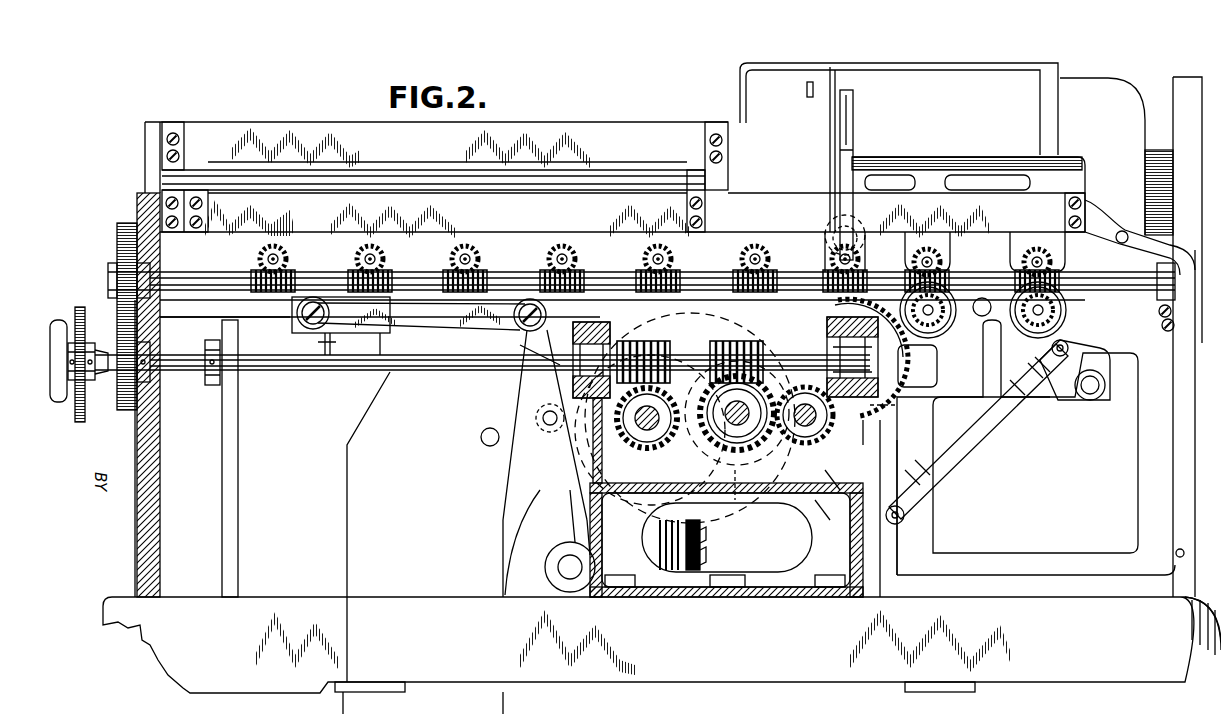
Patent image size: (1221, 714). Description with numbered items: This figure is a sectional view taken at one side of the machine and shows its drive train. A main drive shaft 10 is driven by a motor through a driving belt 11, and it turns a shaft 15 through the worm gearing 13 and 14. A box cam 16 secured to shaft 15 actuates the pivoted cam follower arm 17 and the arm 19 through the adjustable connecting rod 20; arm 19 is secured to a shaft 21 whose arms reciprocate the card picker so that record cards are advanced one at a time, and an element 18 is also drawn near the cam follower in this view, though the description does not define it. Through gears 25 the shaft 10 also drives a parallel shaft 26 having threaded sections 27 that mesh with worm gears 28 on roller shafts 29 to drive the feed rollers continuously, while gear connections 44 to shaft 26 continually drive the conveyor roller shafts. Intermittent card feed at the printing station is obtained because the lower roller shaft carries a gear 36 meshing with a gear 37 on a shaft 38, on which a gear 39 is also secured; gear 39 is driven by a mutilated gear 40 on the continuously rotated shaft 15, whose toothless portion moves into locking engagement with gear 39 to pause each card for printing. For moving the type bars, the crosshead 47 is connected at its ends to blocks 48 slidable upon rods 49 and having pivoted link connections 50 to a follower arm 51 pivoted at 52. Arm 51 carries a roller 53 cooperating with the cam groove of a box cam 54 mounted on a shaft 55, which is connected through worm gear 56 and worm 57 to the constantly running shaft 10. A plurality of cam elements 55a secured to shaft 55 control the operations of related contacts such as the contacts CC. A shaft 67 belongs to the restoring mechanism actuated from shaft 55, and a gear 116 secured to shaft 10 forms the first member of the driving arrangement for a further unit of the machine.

The main drive shaft 10 is at (312, 372).
The driving belt 11 is at (232, 482).
The worm gearing 13 is at (748, 350).
The worm gearing 14 is at (690, 350).
The shaft 15 is at (800, 385).
The box cam 16 is at (795, 500).
The cam follower arm 17 is at (900, 505).
The shaft 18 is at (732, 505).
The arm 19 is at (1070, 390).
The adjustable connecting rod 20 is at (990, 432).
The shaft 21 is at (1092, 395).
The gears 25 is at (117, 340).
The parallel shaft 26 is at (213, 275).
The threaded sections 27 is at (1025, 270).
The worm gears 28 is at (1030, 318).
The roller shafts 29 is at (940, 318).
The gear 36 is at (890, 360).
The gear 37 is at (895, 418).
The shaft 38 is at (871, 437).
The gear 39 is at (835, 494).
The mutilated gear 40 is at (827, 520).
The gear connections 44 is at (352, 256).
The crosshead 47 is at (338, 344).
The blocks 48 is at (296, 330).
The rods 49 is at (212, 320).
The link connections 50 is at (415, 312).
The follower arm 51 is at (540, 505).
The pivot 52 is at (558, 568).
The roller 53 is at (535, 450).
The box cam 54 is at (552, 340).
The shaft 55 is at (640, 440).
The cam elements 55a is at (538, 405).
The worm gear 56 is at (690, 450).
The worm 57 is at (640, 345).
The shaft 67 is at (483, 442).
The gear 116 is at (80, 305).
The contacts CC is at (690, 540).